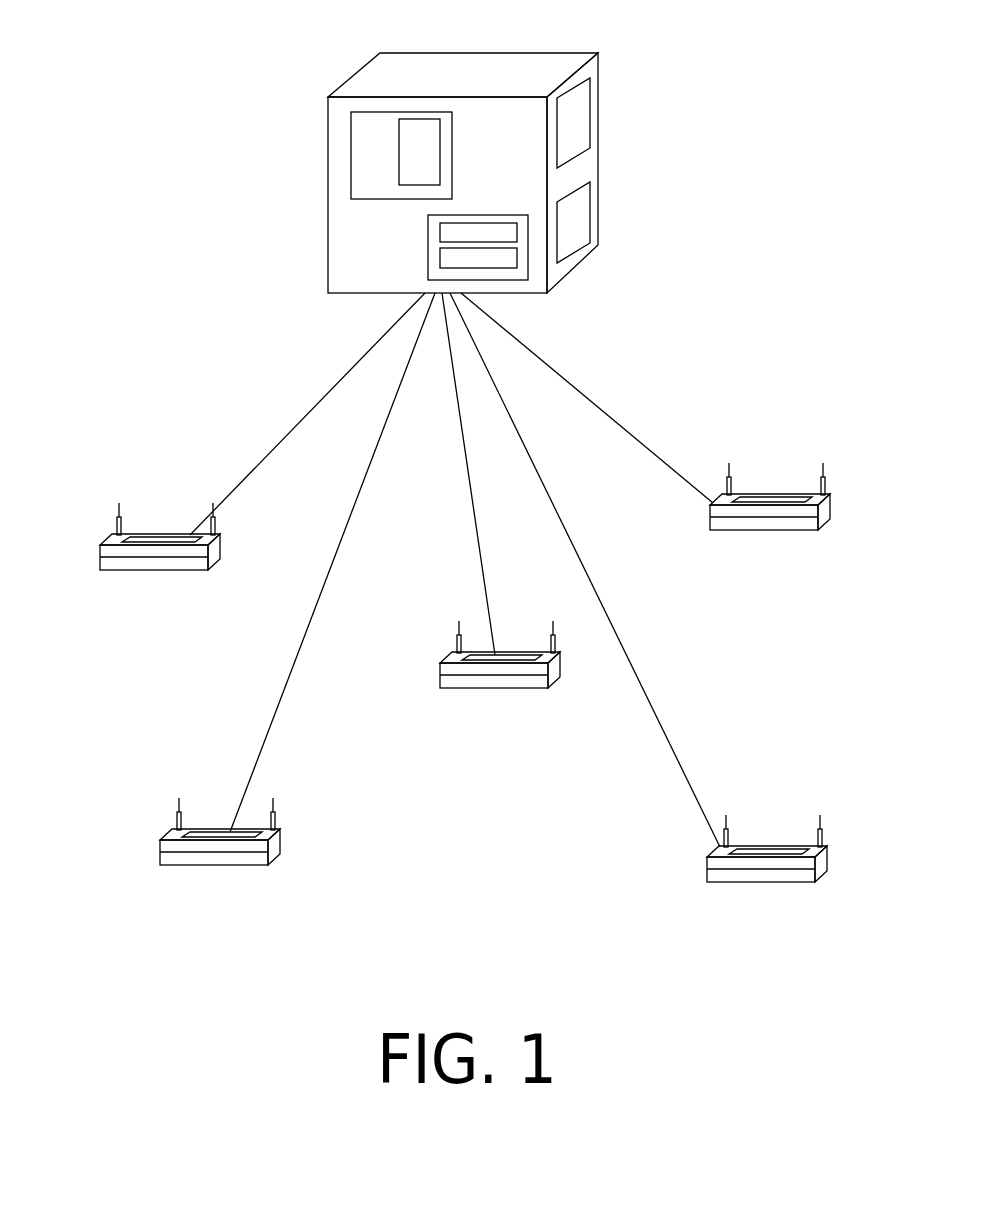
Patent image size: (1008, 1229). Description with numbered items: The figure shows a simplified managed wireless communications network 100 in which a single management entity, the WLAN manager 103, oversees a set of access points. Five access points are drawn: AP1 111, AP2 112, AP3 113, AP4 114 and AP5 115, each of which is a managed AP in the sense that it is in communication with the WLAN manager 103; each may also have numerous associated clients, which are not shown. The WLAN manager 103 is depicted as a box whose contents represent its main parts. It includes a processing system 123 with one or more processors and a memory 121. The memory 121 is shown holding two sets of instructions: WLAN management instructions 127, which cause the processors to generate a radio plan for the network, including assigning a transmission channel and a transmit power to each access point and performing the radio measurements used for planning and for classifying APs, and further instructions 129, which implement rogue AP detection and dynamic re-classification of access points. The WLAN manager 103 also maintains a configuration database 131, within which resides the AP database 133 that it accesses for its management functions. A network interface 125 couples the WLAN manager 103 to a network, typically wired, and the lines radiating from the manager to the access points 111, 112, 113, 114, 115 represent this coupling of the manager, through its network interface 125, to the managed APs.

The wireless communications network 100 is at (279, 1006).
The WLAN manager 103 is at (445, 167).
The access point AP1 111 is at (182, 572).
The access point AP2 112 is at (490, 690).
The access point AP3 113 is at (830, 495).
The access point AP4 114 is at (775, 882).
The access point AP5 115 is at (227, 865).
The memory 121 is at (513, 273).
The processing system 123 is at (573, 127).
The network interface 125 is at (582, 197).
The instructions 127 is at (465, 230).
The instructions 129 is at (453, 258).
The configuration database 131 is at (452, 162).
The AP database 133 is at (420, 185).